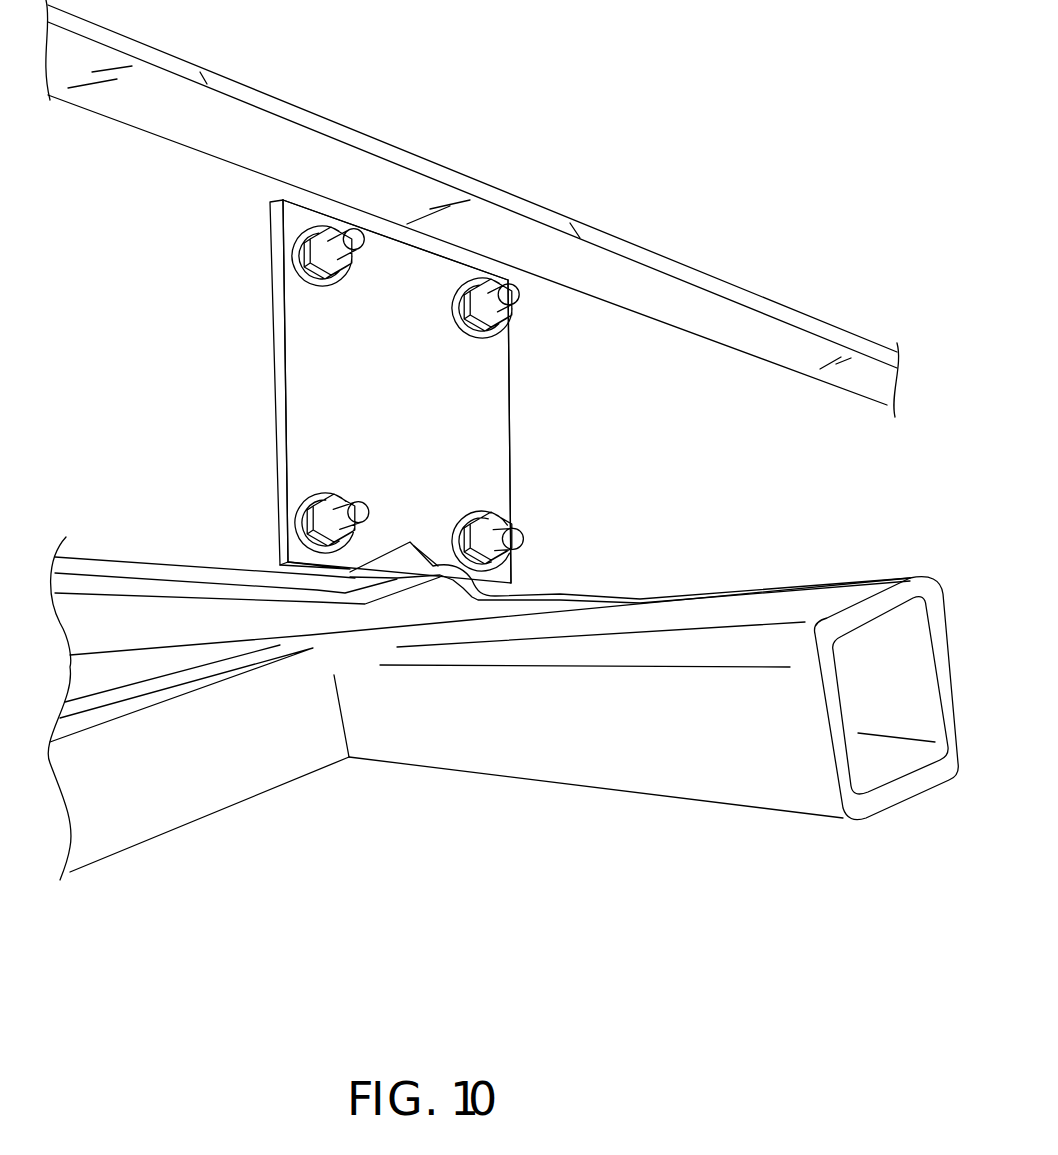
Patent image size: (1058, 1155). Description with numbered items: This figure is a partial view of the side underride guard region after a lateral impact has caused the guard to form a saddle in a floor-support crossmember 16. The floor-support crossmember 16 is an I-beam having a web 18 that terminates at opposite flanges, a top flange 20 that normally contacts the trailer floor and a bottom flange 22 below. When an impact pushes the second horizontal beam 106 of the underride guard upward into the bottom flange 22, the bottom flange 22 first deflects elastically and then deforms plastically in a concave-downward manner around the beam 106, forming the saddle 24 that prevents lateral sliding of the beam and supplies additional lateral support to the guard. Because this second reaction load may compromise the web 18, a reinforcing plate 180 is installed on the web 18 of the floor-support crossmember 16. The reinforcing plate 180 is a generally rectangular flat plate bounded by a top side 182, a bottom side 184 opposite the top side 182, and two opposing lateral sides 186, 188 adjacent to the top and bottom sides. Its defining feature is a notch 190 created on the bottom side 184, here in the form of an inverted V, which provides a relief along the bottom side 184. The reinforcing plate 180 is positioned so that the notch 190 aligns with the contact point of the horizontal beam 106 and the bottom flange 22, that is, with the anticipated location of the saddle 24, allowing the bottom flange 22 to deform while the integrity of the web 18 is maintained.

The floor-support crossmember 16 is at (541, 127).
The web 18 is at (720, 397).
The top flange 20 is at (623, 240).
The bottom flange 22 is at (73, 573).
The saddle 24 is at (443, 603).
The second horizontal beam 106 is at (933, 577).
The reinforcing plate 180 is at (311, 404).
The top side 182 is at (383, 220).
The bottom side 184 is at (318, 577).
The lateral side 186 is at (221, 322).
The lateral side 188 is at (528, 363).
The notch 190 is at (405, 564).